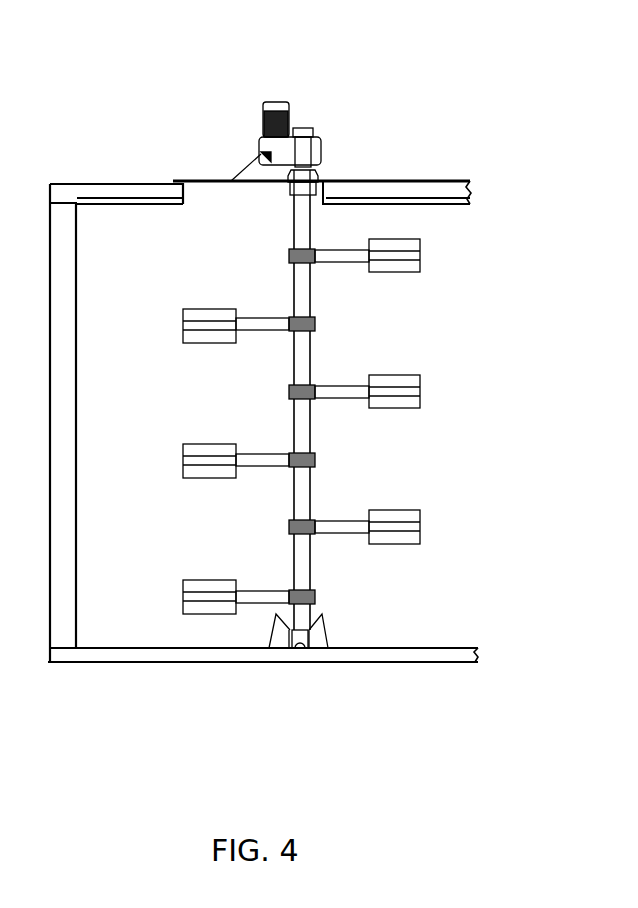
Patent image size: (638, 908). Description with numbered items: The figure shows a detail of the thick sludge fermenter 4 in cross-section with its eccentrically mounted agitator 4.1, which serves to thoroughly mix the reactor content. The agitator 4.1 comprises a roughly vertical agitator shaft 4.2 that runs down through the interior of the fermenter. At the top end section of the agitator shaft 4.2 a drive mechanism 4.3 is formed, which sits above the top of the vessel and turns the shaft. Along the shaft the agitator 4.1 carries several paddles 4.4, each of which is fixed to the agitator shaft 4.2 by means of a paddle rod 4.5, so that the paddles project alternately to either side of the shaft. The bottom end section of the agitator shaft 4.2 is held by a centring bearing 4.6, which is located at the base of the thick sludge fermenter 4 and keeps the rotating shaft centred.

The thick sludge fermenter 4 is at (122, 663).
The agitator 4.1 is at (297, 84).
The agitator shaft 4.2 is at (311, 345).
The drive mechanism 4.3 is at (338, 103).
The paddle 4.4 is at (410, 270).
The paddle rod 4.5 is at (340, 262).
The centring bearing 4.6 is at (325, 631).